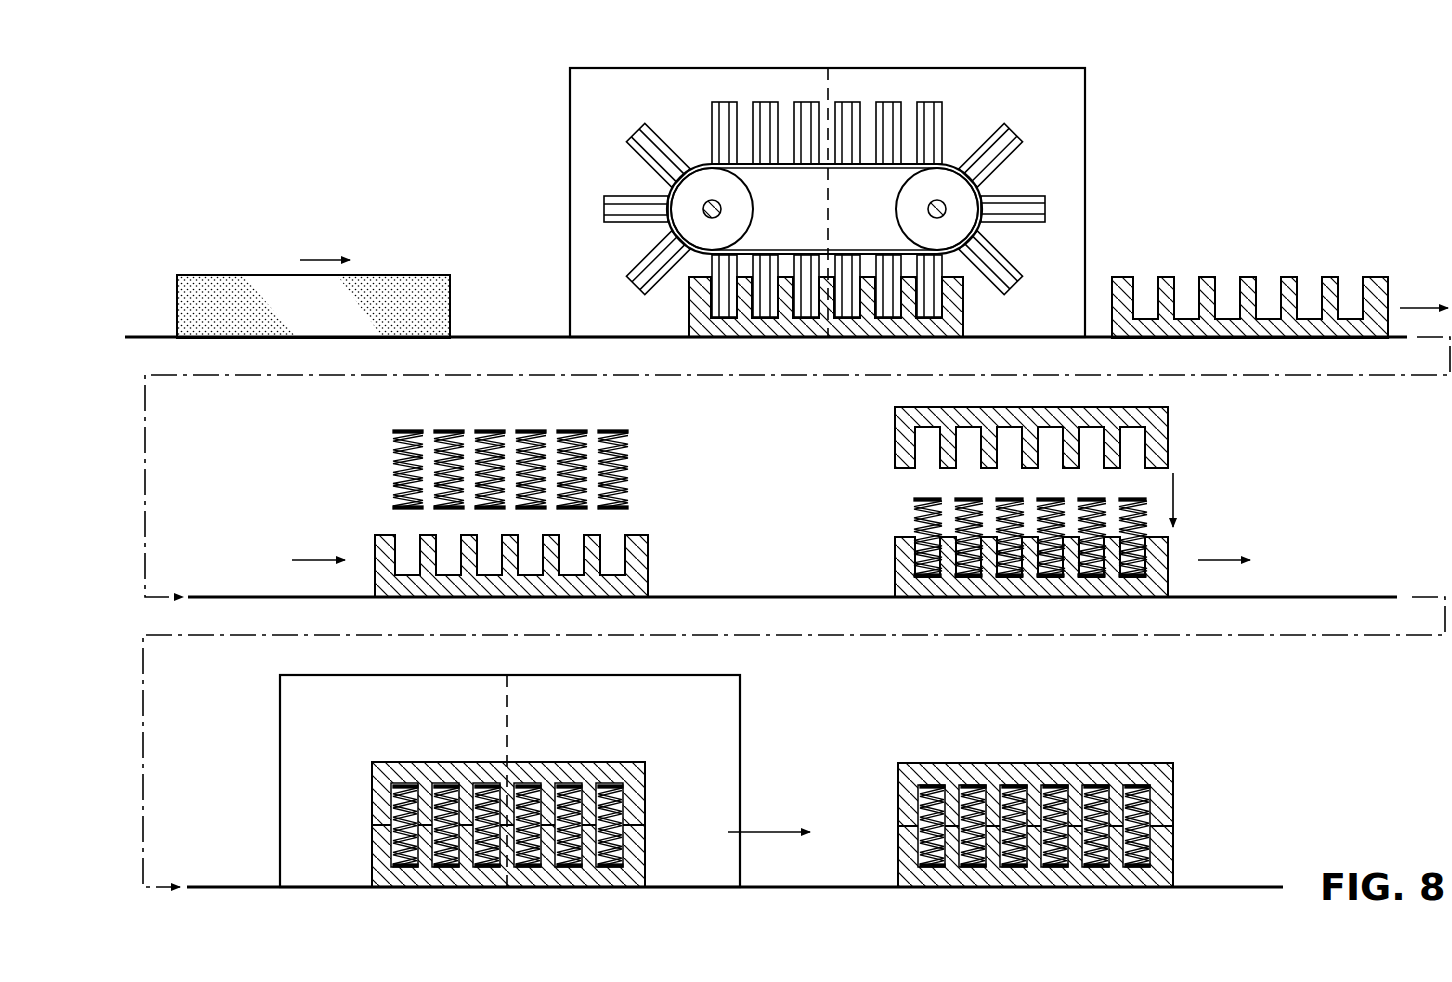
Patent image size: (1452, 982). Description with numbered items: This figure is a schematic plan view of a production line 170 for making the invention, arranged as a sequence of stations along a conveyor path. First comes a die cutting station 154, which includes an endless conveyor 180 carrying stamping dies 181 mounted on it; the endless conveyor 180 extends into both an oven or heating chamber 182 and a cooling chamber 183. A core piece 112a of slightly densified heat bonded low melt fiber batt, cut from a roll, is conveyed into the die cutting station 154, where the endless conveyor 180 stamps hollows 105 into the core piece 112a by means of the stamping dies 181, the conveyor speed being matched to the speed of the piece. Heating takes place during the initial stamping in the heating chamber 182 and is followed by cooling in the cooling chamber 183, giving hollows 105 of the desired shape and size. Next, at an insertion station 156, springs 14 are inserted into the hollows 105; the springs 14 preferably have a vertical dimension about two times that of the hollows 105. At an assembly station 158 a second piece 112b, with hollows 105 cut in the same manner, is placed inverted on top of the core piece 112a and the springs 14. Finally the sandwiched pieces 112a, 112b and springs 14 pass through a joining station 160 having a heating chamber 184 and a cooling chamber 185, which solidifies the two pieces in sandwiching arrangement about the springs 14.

The springs 14 is at (486, 427).
The hollows 105 is at (693, 313).
The core piece 112a is at (388, 275).
The second piece 112b is at (1170, 410).
The die cutting station 154 is at (1098, 184).
The insertion station 156 is at (686, 475).
The assembly station 158 is at (1246, 480).
The joining station 160 is at (748, 721).
The production line 170 is at (238, 130).
The endless conveyor 180 is at (672, 190).
The stamping dies 181 is at (798, 101).
The heating chamber 182 is at (597, 117).
The cooling chamber 183 is at (1082, 116).
The heating chamber 184 is at (434, 719).
The cooling chamber 185 is at (592, 719).